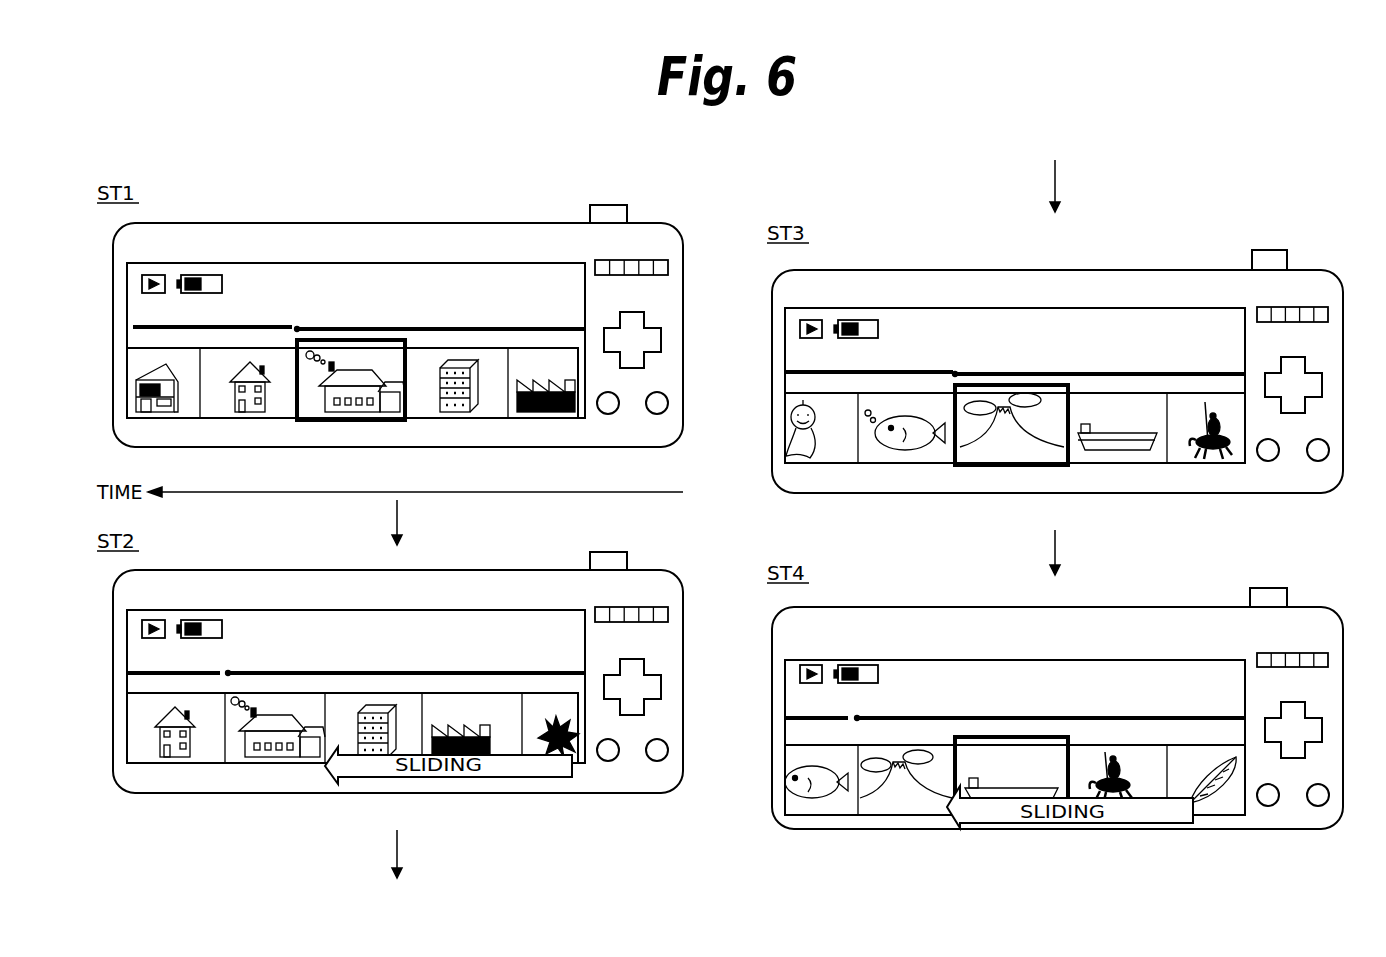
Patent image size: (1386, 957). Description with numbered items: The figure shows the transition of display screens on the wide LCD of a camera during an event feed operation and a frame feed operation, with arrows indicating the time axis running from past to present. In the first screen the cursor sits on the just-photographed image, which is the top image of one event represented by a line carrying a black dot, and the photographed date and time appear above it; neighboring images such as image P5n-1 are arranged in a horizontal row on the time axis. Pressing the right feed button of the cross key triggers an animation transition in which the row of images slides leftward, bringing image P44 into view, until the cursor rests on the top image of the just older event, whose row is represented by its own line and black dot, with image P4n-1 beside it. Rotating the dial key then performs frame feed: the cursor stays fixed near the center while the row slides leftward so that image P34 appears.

The image P5n-1 is at (184, 408).
The image P44 is at (563, 748).
The image P4n-1 is at (835, 455).
The image P34 is at (1225, 802).